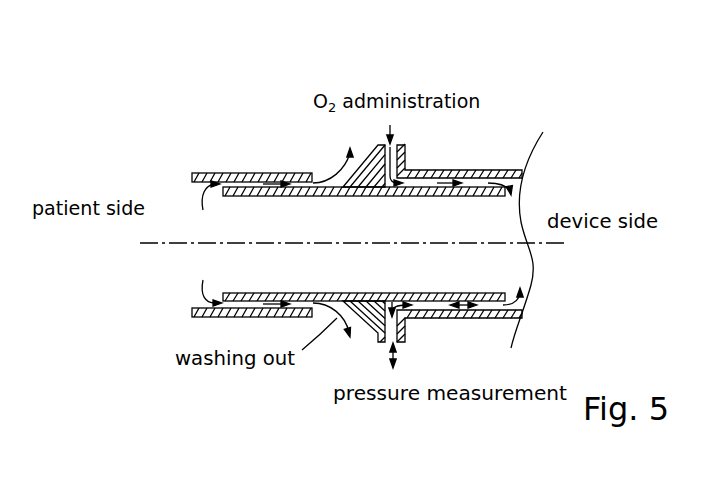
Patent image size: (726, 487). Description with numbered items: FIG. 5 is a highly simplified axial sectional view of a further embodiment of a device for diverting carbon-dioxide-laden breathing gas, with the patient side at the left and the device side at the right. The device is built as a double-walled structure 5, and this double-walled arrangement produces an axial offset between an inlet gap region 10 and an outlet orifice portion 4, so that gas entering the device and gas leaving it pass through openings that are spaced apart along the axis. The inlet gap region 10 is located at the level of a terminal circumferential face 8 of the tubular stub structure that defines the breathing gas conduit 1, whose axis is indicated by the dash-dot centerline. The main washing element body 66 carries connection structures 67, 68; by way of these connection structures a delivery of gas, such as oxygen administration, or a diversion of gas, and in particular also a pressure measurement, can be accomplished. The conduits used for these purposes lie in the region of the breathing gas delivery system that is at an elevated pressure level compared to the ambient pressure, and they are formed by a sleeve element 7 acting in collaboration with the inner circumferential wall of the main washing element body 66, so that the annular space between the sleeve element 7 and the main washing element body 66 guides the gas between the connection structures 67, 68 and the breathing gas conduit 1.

The breathing gas conduit 1 is at (352, 232).
The outlet orifice portion 4 is at (340, 340).
The double-walled structure 5 is at (247, 133).
The sleeve element 7 is at (247, 198).
The terminal circumferential face 8 is at (220, 292).
The inlet gap region 10 is at (213, 204).
The main washing element body 66 is at (447, 166).
The connection structure 67 is at (397, 82).
The connection structure 68 is at (395, 414).